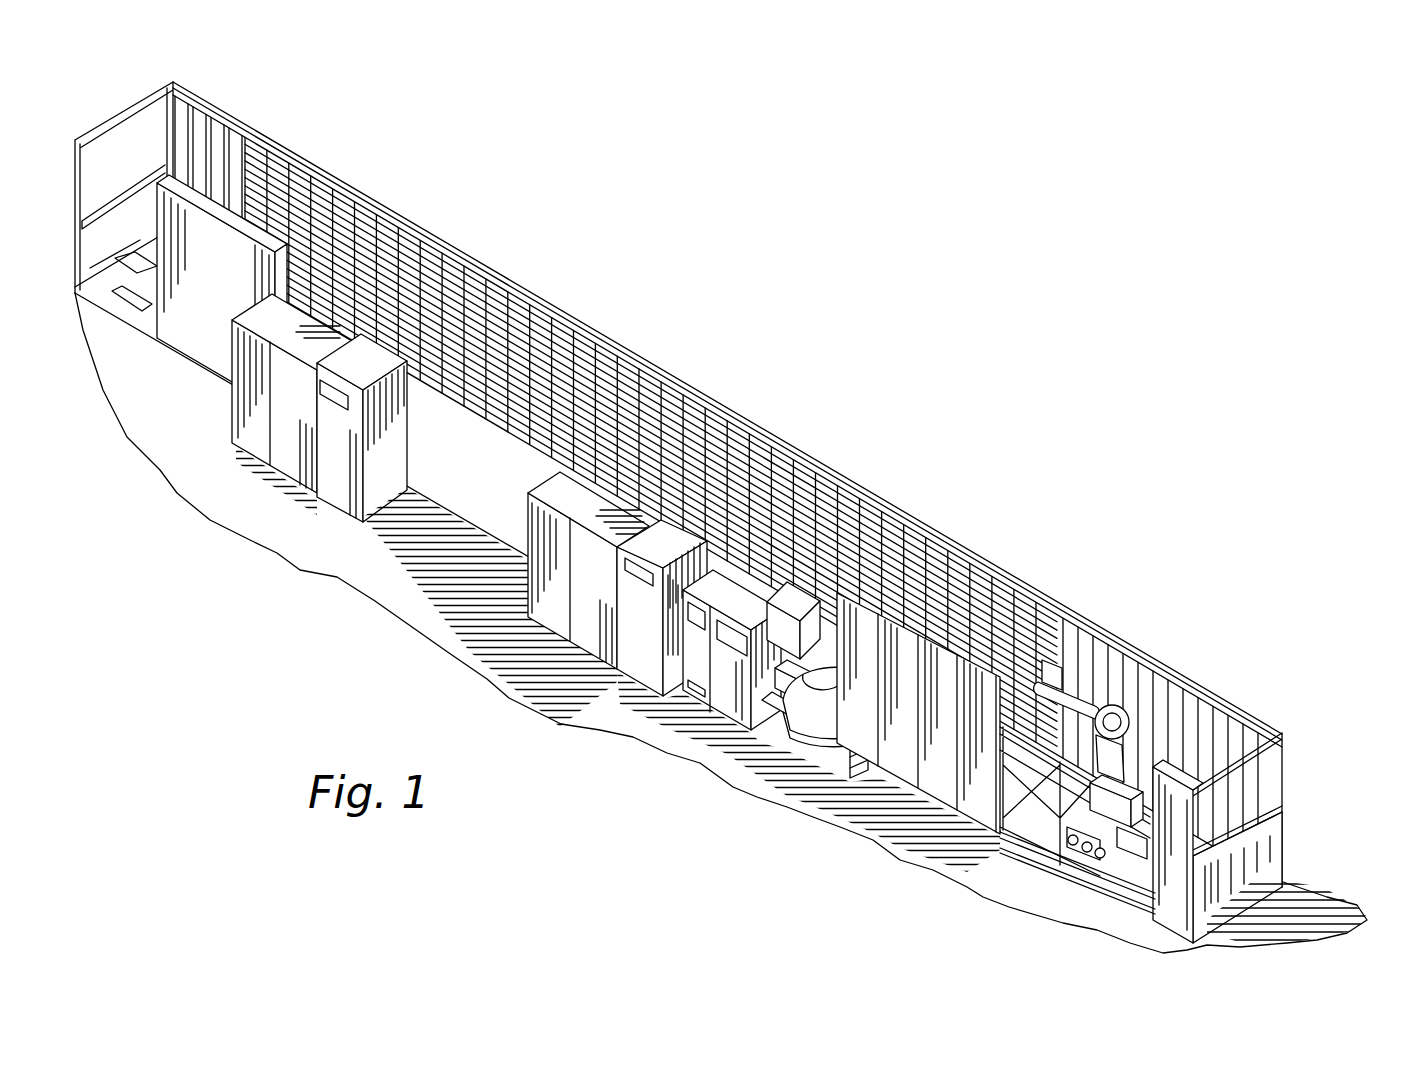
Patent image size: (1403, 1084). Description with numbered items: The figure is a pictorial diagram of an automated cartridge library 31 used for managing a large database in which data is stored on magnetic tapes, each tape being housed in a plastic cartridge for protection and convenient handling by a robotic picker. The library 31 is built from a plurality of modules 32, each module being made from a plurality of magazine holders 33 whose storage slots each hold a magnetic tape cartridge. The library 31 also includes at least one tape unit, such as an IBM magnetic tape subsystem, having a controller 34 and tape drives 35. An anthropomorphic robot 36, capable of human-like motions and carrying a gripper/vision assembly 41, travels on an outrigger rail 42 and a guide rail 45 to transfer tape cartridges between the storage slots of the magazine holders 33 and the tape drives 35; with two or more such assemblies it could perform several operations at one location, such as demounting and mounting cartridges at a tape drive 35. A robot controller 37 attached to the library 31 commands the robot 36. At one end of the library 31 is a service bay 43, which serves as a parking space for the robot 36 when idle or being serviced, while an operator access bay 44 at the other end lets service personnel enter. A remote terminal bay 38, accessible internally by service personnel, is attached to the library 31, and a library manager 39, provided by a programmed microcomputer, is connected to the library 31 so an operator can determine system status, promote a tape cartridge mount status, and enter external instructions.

The automated cartridge library 31 is at (607, 268).
The modules 32 is at (182, 350).
The magazine holders 33 is at (690, 378).
The controller 34 is at (318, 497).
The tape drives 35 is at (247, 447).
The robot 36 is at (1112, 705).
The robot controller 37 is at (725, 717).
The remote terminal bay 38 is at (787, 600).
The library manager 39 is at (785, 724).
The gripper/vision assembly 41 is at (1050, 687).
The outrigger rail 42 is at (1028, 845).
The service bay 43 is at (1075, 801).
The operator access bay 44 is at (135, 212).
The guide rail 45 is at (1075, 872).